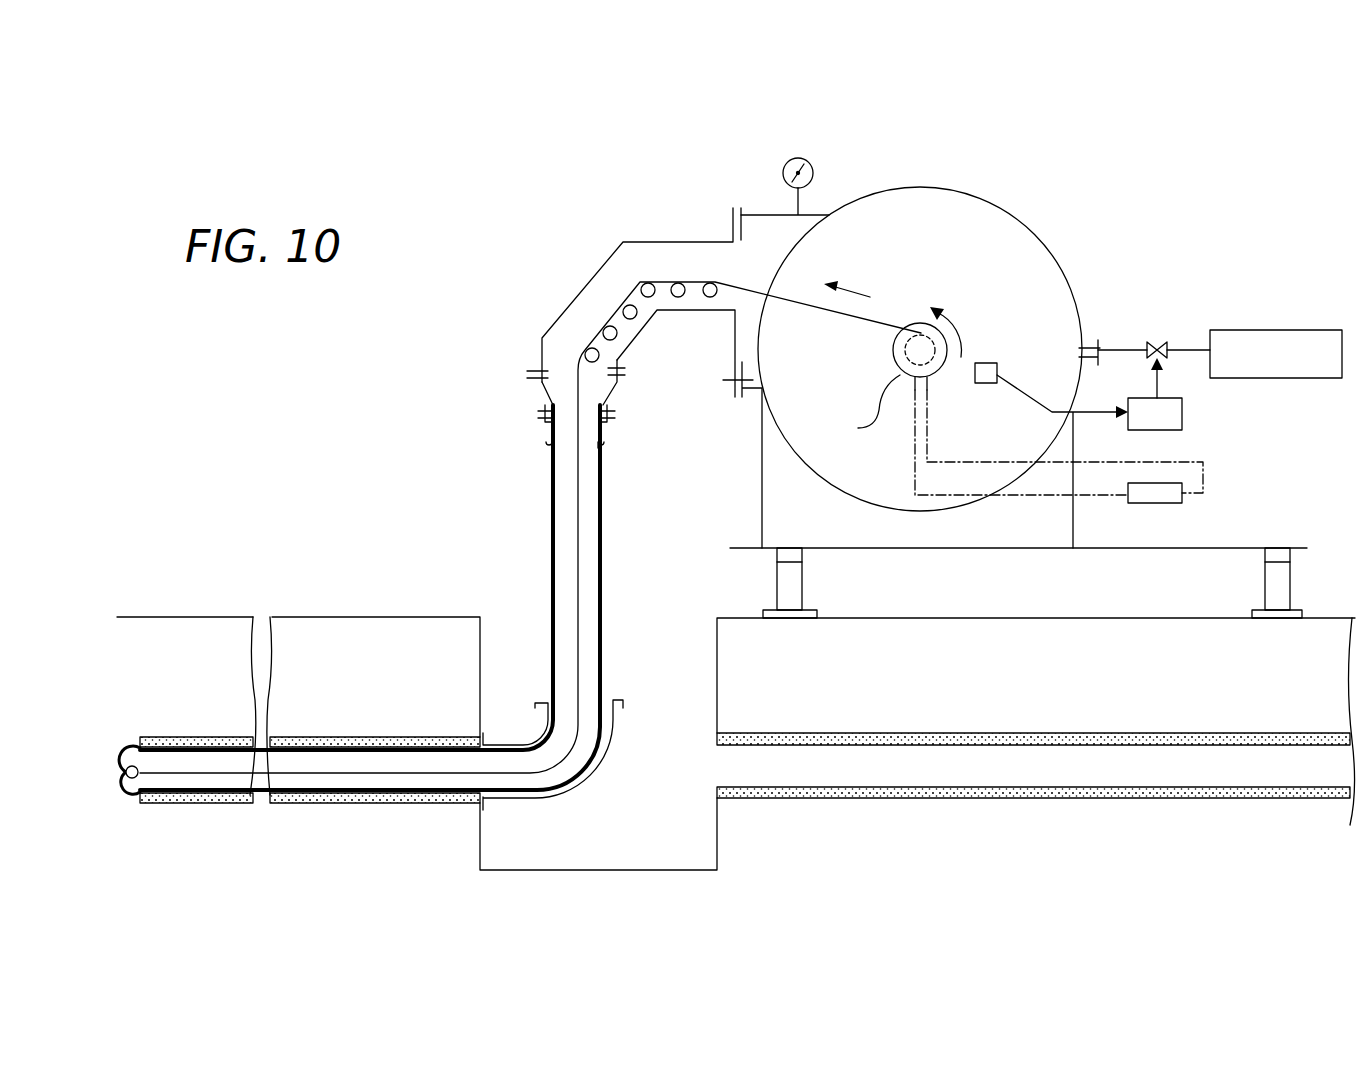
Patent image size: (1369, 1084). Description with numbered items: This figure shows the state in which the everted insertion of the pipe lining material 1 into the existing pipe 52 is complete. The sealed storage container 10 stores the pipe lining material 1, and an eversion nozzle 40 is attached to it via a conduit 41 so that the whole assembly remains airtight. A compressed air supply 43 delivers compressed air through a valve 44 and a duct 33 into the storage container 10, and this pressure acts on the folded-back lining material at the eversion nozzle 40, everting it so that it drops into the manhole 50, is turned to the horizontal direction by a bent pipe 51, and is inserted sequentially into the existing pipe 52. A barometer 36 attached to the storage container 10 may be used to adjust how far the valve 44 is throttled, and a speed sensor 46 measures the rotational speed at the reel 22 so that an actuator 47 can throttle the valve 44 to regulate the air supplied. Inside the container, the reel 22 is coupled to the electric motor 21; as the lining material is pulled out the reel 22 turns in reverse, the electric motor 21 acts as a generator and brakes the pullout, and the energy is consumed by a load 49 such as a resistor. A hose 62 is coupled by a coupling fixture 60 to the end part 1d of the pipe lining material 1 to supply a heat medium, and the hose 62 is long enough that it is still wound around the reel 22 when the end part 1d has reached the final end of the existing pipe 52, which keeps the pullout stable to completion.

The pipe lining material 1 is at (600, 585).
The end part 1d is at (126, 773).
The storage container 10 is at (975, 196).
The electric motor 21 is at (864, 412).
The reel 22 is at (905, 346).
The duct 33 is at (1098, 340).
The barometer 36 is at (817, 177).
The eversion nozzle 40 is at (602, 433).
The conduit 41 is at (583, 288).
The compressed air supply 43 is at (1245, 330).
The valve 44 is at (1158, 342).
The speed sensor 46 is at (997, 366).
The actuator 47 is at (1183, 416).
The load 49 is at (1152, 505).
The manhole 50 is at (518, 622).
The bent pipe 51 is at (598, 763).
The existing pipe 52 is at (293, 805).
The coupling fixture 60 is at (128, 757).
The hose 62 is at (690, 282).